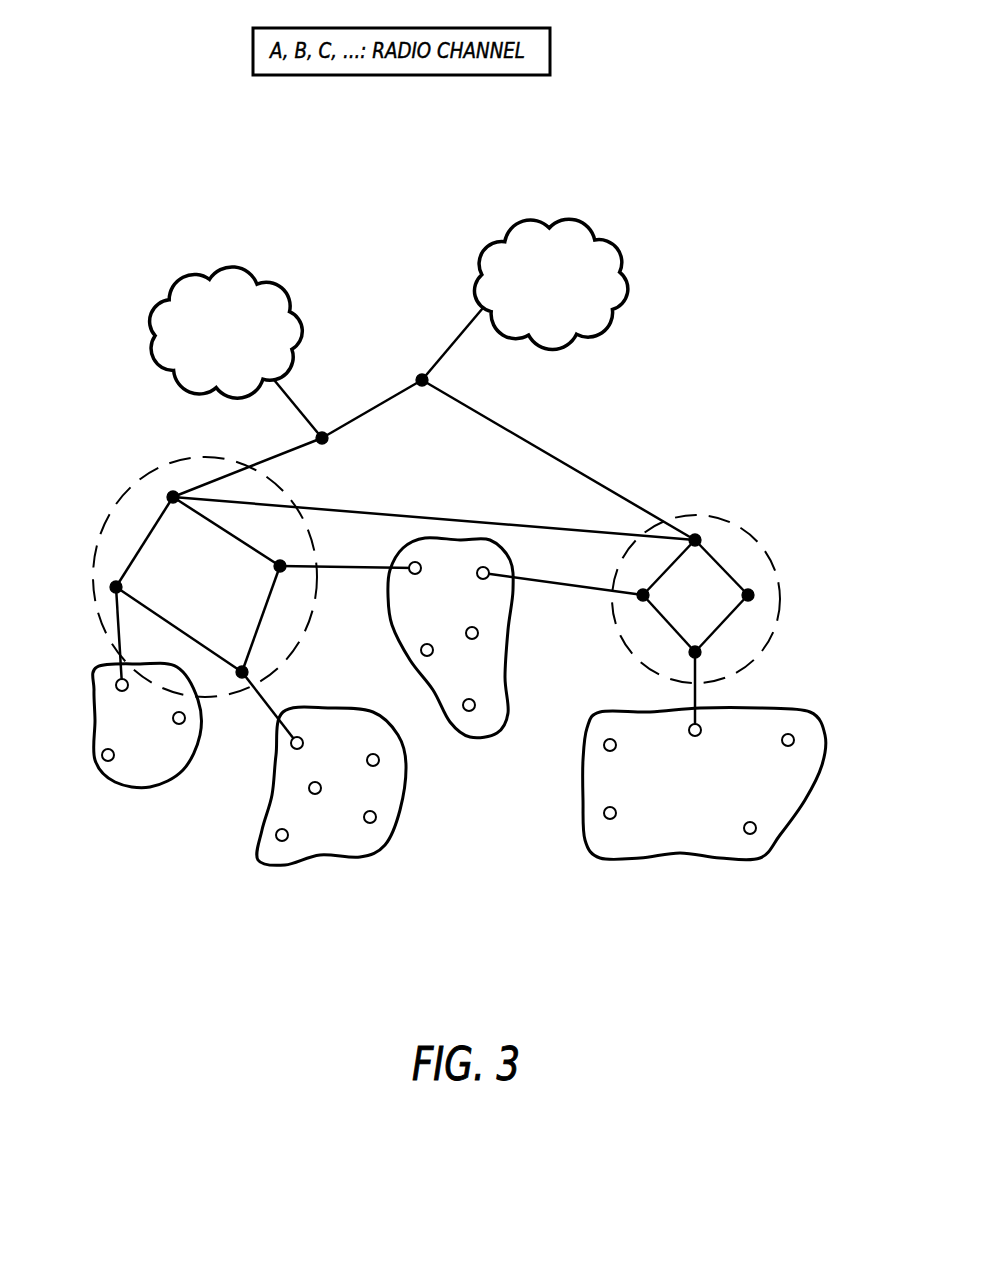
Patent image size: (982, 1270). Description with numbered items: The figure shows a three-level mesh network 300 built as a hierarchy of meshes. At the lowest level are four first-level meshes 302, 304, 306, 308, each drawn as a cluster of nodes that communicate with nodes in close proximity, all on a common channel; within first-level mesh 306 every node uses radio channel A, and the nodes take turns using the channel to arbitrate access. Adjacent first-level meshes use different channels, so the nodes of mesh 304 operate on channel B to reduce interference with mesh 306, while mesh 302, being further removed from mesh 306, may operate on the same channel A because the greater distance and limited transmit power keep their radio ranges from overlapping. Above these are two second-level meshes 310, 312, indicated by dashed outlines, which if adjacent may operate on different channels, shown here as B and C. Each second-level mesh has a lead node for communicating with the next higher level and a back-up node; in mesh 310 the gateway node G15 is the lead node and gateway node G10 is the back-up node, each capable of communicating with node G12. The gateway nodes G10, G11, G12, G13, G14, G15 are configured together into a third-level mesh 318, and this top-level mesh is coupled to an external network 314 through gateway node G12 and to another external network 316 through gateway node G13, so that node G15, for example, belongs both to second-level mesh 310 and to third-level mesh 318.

The three-level mesh network 300 is at (720, 395).
The first-level mesh 302 is at (150, 790).
The first-level mesh 304 is at (328, 857).
The first-level mesh 306 is at (480, 738).
The first-level mesh 308 is at (673, 853).
The second-level mesh 310 is at (98, 538).
The second-level mesh 312 is at (775, 567).
The external network 314 is at (237, 272).
The external network 316 is at (560, 343).
The third-level mesh 318 is at (371, 378).
The gateway node G10 is at (280, 566).
The gateway node G11 is at (643, 595).
The gateway node G12 is at (322, 438).
The gateway node G13 is at (422, 380).
The gateway node G14 is at (695, 540).
The gateway node G15 is at (173, 497).